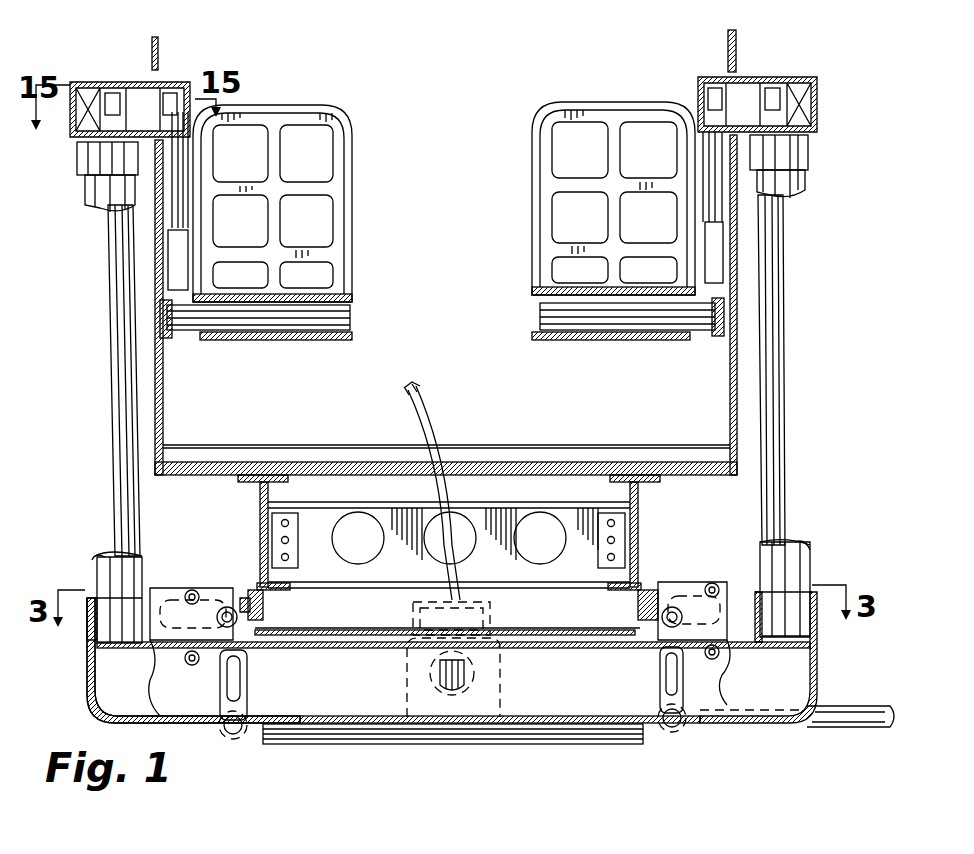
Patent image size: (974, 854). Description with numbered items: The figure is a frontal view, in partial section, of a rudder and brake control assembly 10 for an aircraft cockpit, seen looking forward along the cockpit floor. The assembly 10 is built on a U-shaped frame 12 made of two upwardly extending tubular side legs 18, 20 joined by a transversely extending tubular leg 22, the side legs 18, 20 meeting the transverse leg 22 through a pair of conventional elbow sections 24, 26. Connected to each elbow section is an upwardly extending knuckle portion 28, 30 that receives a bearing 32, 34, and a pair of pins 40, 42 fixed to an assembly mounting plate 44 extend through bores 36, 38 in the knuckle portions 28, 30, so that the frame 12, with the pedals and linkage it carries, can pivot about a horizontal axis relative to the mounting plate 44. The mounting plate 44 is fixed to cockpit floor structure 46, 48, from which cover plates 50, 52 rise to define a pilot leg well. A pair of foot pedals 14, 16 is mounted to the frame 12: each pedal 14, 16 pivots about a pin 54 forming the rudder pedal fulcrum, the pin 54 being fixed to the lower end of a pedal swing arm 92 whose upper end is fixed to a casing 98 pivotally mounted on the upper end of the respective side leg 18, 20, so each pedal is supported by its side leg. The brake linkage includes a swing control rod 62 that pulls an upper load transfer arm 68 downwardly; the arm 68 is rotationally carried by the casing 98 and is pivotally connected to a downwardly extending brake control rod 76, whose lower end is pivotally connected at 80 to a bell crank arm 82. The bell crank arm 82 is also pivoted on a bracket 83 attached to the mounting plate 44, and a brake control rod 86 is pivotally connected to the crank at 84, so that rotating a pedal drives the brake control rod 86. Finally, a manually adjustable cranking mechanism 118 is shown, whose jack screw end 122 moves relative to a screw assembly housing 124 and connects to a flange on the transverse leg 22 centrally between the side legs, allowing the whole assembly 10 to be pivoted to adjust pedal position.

The rudder and brake control assembly 10 is at (893, 290).
The U-shaped frame 12 is at (822, 568).
The foot pedal 14 is at (352, 180).
The foot pedal 16 is at (535, 158).
The tubular side leg 18 is at (808, 178).
The tubular side leg 20 is at (105, 195).
The transversely extending tubular leg 22 is at (378, 724).
The elbow section 24 is at (818, 672).
The elbow section 26 is at (92, 710).
The knuckle portion 28 is at (645, 600).
The knuckle portion 30 is at (252, 595).
The bearing 32 is at (655, 612).
The bearing 34 is at (252, 597).
The bore 36 is at (665, 600).
The bore 38 is at (238, 606).
The pin 40 is at (640, 648).
The pin 42 is at (273, 640).
The assembly mounting plate 44 is at (500, 590).
The cockpit floor structure 46 is at (312, 525).
The cockpit floor structure 48 is at (280, 462).
The cover plate 50 is at (163, 412).
The cover plate 52 is at (731, 380).
The pin 54 is at (305, 315).
The swing control rod 62 is at (183, 167).
The upper load transfer arm 68 is at (95, 150).
The brake control rod 76 is at (118, 368).
The pivotal connection 80 is at (90, 640).
The bell crank arm 82 is at (230, 670).
The bracket 83 is at (128, 565).
The pivotal connection 84 is at (238, 740).
The brake control rod 86 is at (472, 730).
The pedal swing arm 92 is at (178, 252).
The casing 98 is at (80, 84).
The manually adjustable cranking mechanism 118 is at (447, 422).
The end of jack screw assembly 122 is at (470, 683).
The screw assembly housing 124 is at (492, 628).